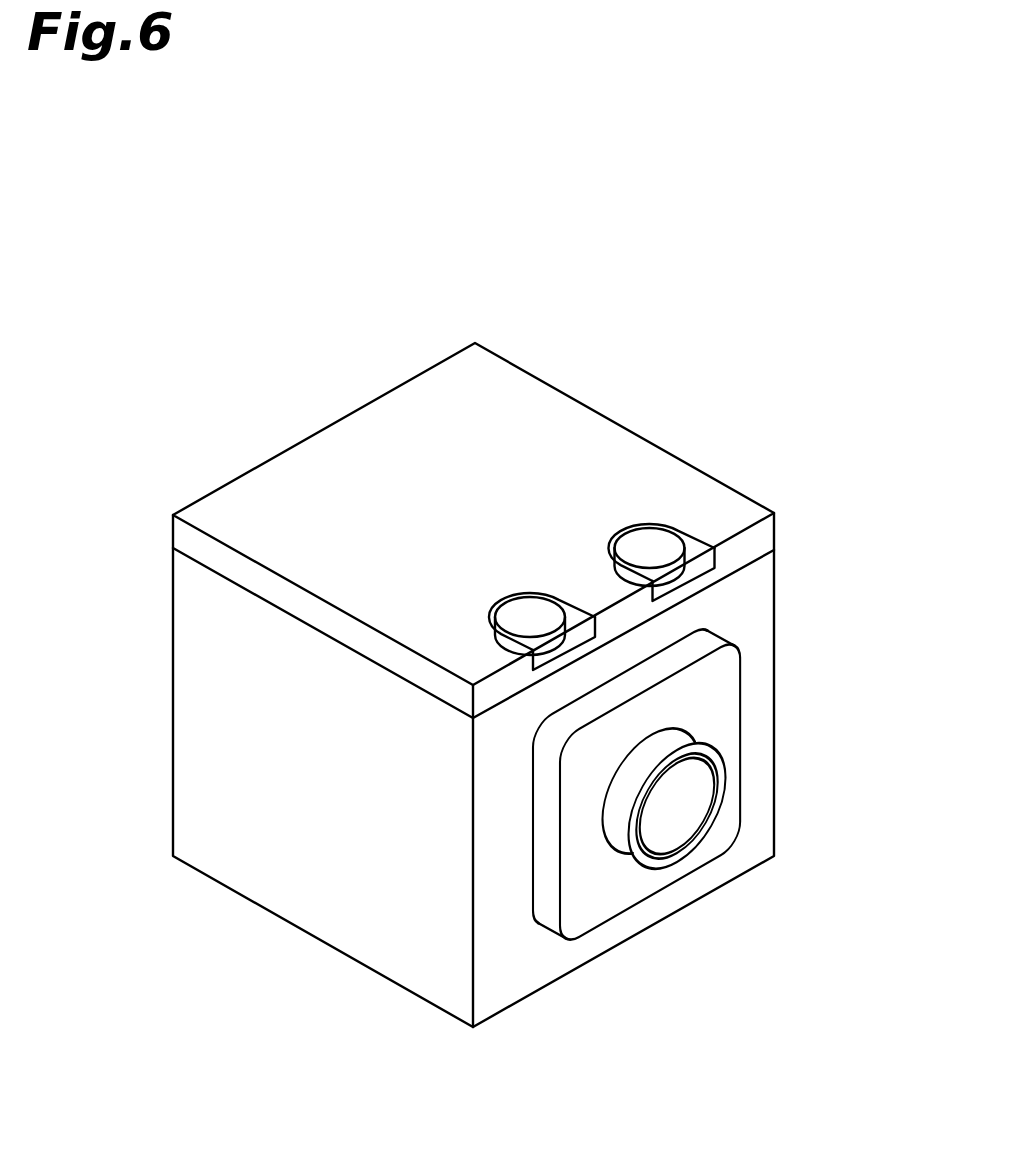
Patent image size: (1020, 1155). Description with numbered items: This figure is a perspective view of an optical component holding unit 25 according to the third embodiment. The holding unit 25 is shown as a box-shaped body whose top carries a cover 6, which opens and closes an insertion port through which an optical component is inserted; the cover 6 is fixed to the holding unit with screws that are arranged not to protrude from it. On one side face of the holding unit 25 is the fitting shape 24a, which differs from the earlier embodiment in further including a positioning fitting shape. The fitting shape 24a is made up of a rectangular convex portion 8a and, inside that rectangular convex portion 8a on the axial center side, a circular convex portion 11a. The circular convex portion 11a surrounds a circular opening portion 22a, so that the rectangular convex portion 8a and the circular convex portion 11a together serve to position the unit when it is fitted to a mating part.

The cover 6 is at (582, 488).
The optical component holding unit 25 is at (241, 246).
The rectangular convex portion 8a is at (543, 880).
The circular convex portion 11a is at (766, 852).
The circular opening portion 22a is at (676, 770).
The fitting shape 24a is at (725, 862).